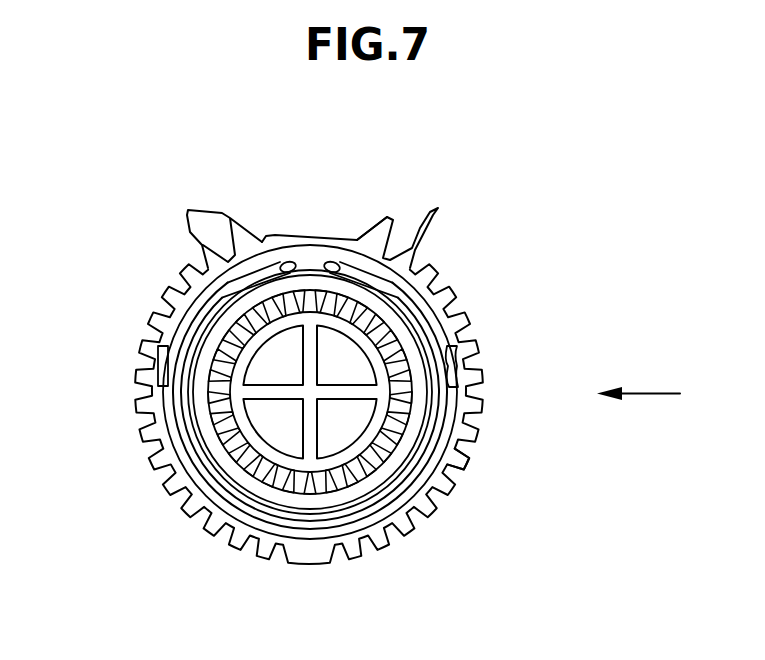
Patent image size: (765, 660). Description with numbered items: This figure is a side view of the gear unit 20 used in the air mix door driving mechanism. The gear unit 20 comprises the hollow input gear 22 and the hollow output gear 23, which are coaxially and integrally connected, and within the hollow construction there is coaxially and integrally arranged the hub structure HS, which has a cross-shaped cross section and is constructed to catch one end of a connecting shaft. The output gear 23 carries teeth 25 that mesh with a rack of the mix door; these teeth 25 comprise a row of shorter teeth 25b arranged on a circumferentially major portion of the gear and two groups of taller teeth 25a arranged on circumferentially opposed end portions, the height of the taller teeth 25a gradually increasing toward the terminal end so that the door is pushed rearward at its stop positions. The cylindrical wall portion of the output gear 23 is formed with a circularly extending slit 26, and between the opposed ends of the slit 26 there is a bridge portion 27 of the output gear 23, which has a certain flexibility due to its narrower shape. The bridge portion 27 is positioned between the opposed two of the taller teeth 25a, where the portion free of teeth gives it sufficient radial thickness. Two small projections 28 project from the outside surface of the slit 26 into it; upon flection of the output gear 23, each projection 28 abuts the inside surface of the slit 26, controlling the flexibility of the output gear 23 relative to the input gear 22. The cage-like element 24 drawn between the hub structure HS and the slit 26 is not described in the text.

The gear unit 20 is at (160, 152).
The input gear 22 is at (441, 342).
The output gear 23 is at (359, 224).
The roller bearing cage 24 is at (413, 392).
The teeth 25 is at (455, 299).
The taller teeth 25a is at (188, 210).
The shorter teeth 25b is at (433, 518).
The circularly extending slit 26 is at (190, 308).
The bridge portion 27 is at (313, 255).
The projections 28 is at (165, 386).
The hub structure HS is at (349, 402).